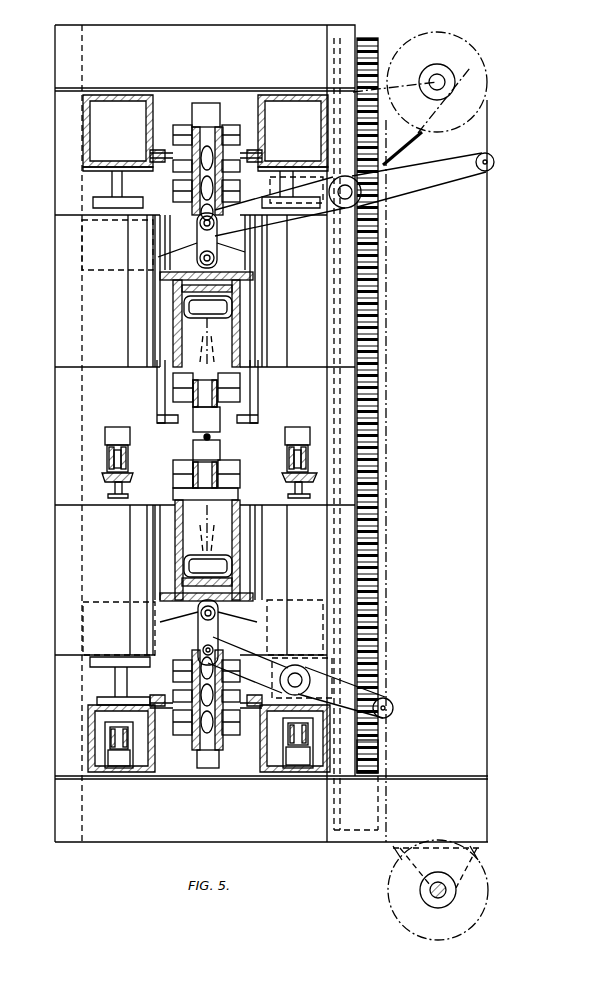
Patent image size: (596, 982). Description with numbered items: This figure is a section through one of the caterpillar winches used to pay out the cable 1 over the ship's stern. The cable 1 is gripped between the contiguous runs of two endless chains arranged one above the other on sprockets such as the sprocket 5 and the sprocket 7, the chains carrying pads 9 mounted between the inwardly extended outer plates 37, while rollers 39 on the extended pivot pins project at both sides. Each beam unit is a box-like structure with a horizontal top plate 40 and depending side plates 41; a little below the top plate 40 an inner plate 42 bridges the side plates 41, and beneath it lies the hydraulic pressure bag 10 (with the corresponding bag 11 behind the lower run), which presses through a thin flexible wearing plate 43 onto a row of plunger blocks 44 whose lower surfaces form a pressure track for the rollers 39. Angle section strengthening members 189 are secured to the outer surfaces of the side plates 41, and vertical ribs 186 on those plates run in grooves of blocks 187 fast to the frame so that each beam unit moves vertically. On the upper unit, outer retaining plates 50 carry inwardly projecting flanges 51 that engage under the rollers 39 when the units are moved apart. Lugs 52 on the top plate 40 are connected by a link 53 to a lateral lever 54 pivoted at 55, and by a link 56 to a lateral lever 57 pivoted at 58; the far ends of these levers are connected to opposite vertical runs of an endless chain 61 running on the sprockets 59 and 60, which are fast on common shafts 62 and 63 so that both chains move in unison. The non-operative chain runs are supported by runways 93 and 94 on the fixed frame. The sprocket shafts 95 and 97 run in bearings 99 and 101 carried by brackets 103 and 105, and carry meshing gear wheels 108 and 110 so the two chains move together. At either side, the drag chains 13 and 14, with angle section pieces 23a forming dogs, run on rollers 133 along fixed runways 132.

The cable 1 is at (212, 437).
The sprocket 5 is at (203, 346).
The sprocket 7 is at (207, 529).
The blocks or pads 9 is at (210, 103).
The hydraulic pressure bag 10 is at (200, 307).
The hydraulic pressure bag 11 is at (200, 566).
The endless drag chain 13 is at (109, 459).
The endless drag chain 14 is at (289, 455).
The angle section pieces 23a is at (116, 427).
The outer plates 37 is at (193, 420).
The rollers 39 is at (183, 125).
The top plate 40 is at (160, 268).
The side plates 41 is at (175, 335).
The inner plate 42 is at (182, 289).
The wearing plate 43 is at (240, 316).
The plunger blocks 44 is at (251, 345).
The outer retaining plates 50 is at (157, 381).
The inwardly projecting flanges 51 is at (166, 417).
The lugs 52 is at (245, 262).
The link 53 is at (197, 242).
The lateral lever 54 is at (430, 190).
The pivot 55 is at (362, 191).
The link 56 is at (198, 629).
The lateral lever 57 is at (365, 700).
The pivot 58 is at (298, 665).
The sprocket 59 is at (470, 47).
The sprocket 60 is at (447, 884).
The endless chain 61 is at (488, 308).
The common shaft 62 is at (446, 80).
The common shaft 63 is at (430, 890).
The runways 93 is at (168, 150).
The runways 94 is at (176, 770).
The shaft 95 is at (172, 218).
The shaft 97 is at (170, 641).
The bearing 99 is at (93, 238).
The bearing 101 is at (100, 612).
The bracket 103 is at (122, 178).
The bracket 105 is at (124, 684).
The gear wheel 108 is at (376, 52).
The gear wheel 110 is at (370, 748).
The fixed runways 132 is at (131, 481).
The rollers 133 is at (112, 446).
The vertical ribs 186 is at (145, 351).
The blocks 187 is at (110, 334).
The angle section strengthening members 189 is at (257, 290).